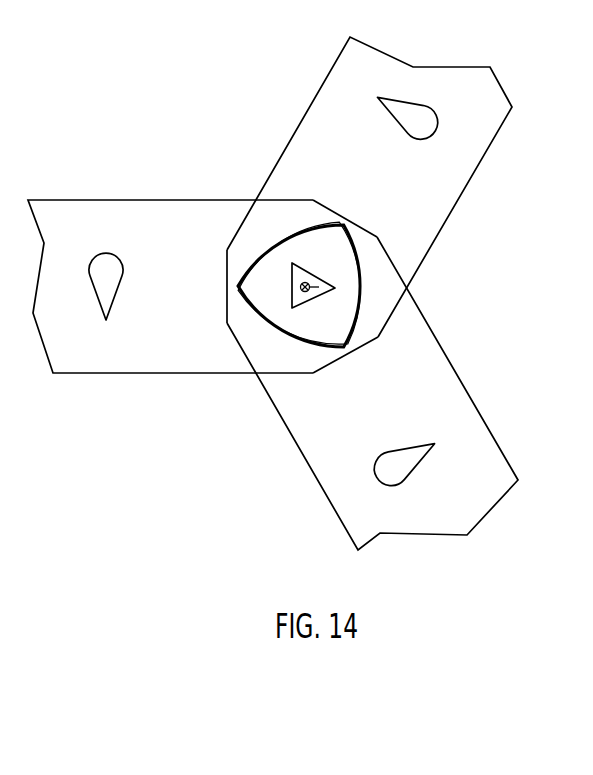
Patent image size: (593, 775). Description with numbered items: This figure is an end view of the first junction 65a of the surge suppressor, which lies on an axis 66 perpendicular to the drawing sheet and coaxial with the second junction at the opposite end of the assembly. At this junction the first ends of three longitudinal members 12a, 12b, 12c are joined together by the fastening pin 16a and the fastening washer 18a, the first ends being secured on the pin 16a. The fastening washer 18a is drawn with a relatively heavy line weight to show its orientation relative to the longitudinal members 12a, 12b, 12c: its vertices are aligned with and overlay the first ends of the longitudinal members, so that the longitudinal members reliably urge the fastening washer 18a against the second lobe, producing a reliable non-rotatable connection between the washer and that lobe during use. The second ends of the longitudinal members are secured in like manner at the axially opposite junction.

The longitudinal member 12a is at (190, 258).
The longitudinal member 12b is at (418, 201).
The longitudinal member 12c is at (427, 389).
The fastening pin 16a is at (290, 280).
The fastening washer 18a is at (250, 312).
The first junction 65a is at (290, 293).
The axis 66 is at (335, 288).